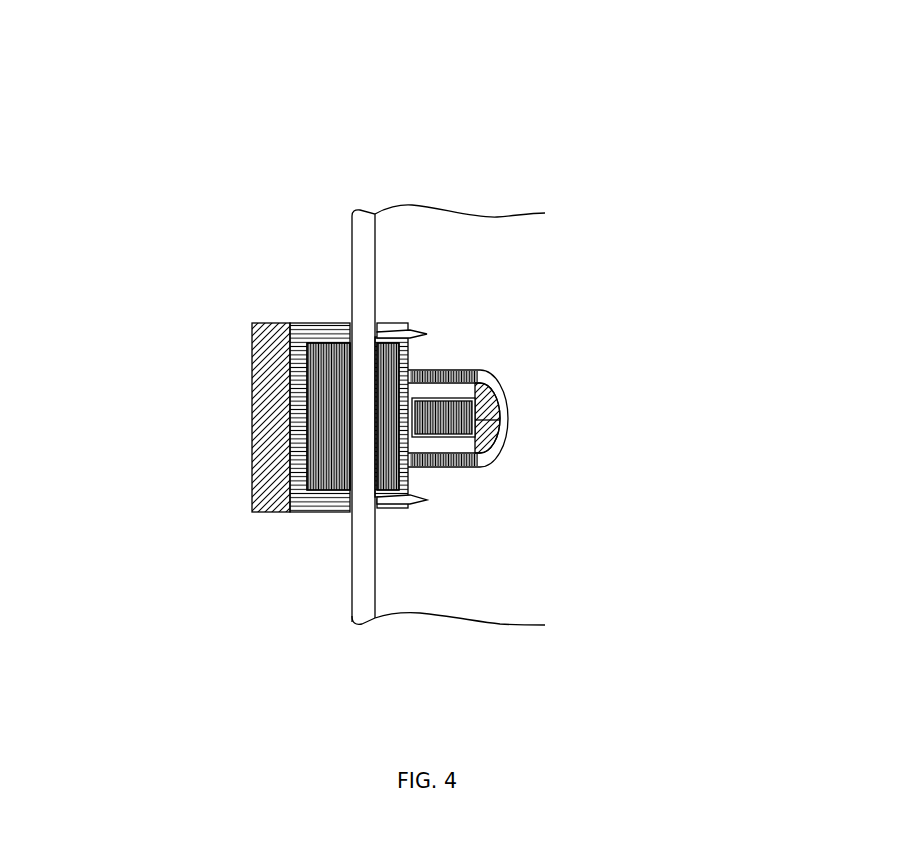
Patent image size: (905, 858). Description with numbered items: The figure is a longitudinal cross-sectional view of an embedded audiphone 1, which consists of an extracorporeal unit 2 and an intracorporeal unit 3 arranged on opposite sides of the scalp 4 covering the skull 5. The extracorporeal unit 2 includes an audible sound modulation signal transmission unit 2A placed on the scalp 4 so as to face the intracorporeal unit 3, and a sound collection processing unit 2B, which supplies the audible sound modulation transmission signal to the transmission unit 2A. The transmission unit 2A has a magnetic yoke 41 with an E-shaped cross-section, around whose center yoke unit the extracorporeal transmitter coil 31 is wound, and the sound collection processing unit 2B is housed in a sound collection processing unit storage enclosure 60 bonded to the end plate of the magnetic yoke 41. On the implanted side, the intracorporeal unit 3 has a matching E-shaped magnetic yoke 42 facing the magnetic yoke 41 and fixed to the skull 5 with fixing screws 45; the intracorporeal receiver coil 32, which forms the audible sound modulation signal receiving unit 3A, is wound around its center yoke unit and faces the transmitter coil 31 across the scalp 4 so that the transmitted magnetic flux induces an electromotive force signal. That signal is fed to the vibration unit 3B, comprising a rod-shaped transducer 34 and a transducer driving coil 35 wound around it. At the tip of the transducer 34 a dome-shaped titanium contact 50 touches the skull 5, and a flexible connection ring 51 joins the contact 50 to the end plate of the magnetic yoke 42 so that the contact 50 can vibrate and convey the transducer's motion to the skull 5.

The embedded audiphone 1 is at (417, 63).
The extracorporeal unit 2 is at (429, 410).
The audible sound modulation signal transmission unit 2A is at (307, 512).
The sound collection processing unit 2B is at (268, 512).
The intracorporeal unit 3 is at (602, 434).
The audible sound modulation signal receiving unit 3A is at (394, 309).
The vibration unit 3B is at (619, 402).
The scalp 4 is at (368, 210).
The skull 5 is at (423, 212).
The extracorporeal transmitter coil 31 is at (298, 327).
The intracorporeal receiver coil 32 is at (390, 515).
The transducer 34 is at (477, 423).
The transducer driving coil 35 is at (482, 392).
The magnetic yoke 41 is at (330, 323).
The magnetic yoke 42 is at (404, 517).
The fixing screws 45 is at (425, 334).
The contact 50 is at (486, 448).
The connection ring 51 is at (432, 370).
The sound collection processing unit storage enclosure 60 is at (262, 463).